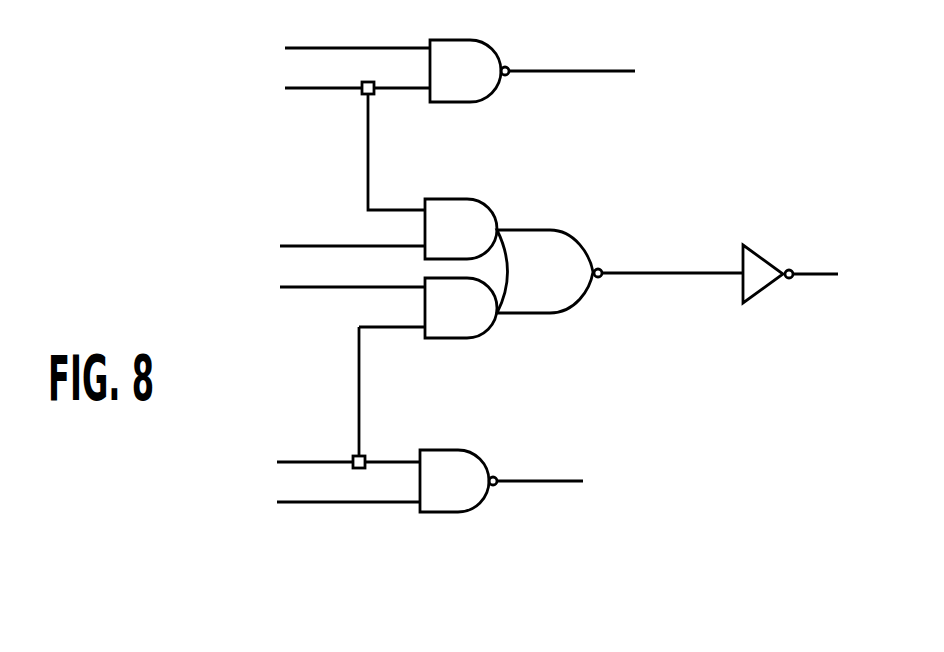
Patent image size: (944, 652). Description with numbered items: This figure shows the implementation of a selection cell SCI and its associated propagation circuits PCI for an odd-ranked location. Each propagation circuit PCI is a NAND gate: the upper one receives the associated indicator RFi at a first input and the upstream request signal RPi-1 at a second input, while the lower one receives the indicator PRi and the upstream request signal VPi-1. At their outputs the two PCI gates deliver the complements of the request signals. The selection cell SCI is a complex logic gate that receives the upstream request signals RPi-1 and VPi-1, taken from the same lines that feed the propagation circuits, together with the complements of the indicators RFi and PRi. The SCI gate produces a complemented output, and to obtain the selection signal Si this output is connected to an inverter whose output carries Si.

The propagation circuit PCI is at (497, 26).
The selection cell SCI is at (513, 221).
The indicator RFi is at (320, 48).
The upstream request signal RPi-1 is at (320, 92).
The signal Si is at (820, 273).
The upstream request signal VPi-1 is at (331, 462).
The indicator PRi is at (327, 503).